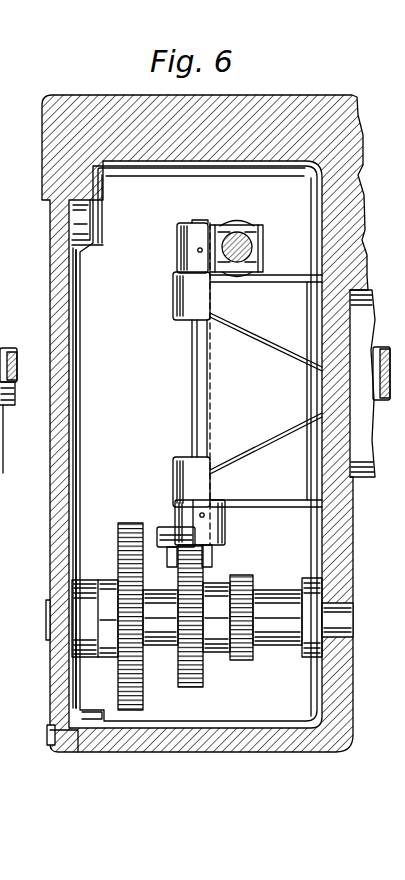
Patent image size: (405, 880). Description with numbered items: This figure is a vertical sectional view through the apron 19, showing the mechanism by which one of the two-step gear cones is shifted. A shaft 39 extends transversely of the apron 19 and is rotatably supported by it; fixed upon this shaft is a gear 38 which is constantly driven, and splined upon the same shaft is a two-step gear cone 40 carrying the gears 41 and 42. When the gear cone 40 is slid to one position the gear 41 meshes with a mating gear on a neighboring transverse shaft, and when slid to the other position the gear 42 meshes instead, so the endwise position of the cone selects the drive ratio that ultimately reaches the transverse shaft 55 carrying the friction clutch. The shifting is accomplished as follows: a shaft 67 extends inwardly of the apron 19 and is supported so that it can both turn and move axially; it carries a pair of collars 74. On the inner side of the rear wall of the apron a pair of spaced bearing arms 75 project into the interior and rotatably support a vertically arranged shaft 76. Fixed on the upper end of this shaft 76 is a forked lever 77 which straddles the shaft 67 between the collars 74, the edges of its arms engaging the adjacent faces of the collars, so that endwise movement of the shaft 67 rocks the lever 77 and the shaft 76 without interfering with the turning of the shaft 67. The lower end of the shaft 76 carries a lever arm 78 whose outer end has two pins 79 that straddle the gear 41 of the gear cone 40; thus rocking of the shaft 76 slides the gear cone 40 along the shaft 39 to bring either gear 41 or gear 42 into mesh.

The apron 19 is at (55, 476).
The gear 38 is at (124, 534).
The shaft 39 is at (275, 607).
The two-step gear cone 40 is at (217, 644).
The gear 41 is at (193, 668).
The gear 42 is at (247, 657).
The shaft 55 is at (5, 348).
The shaft 67 is at (240, 230).
The collars 74 is at (256, 250).
The bearing arms 75 is at (262, 316).
The shaft 76 is at (197, 384).
The forked lever 77 is at (178, 243).
The lever arm 78 is at (177, 527).
The pins 79 is at (214, 553).